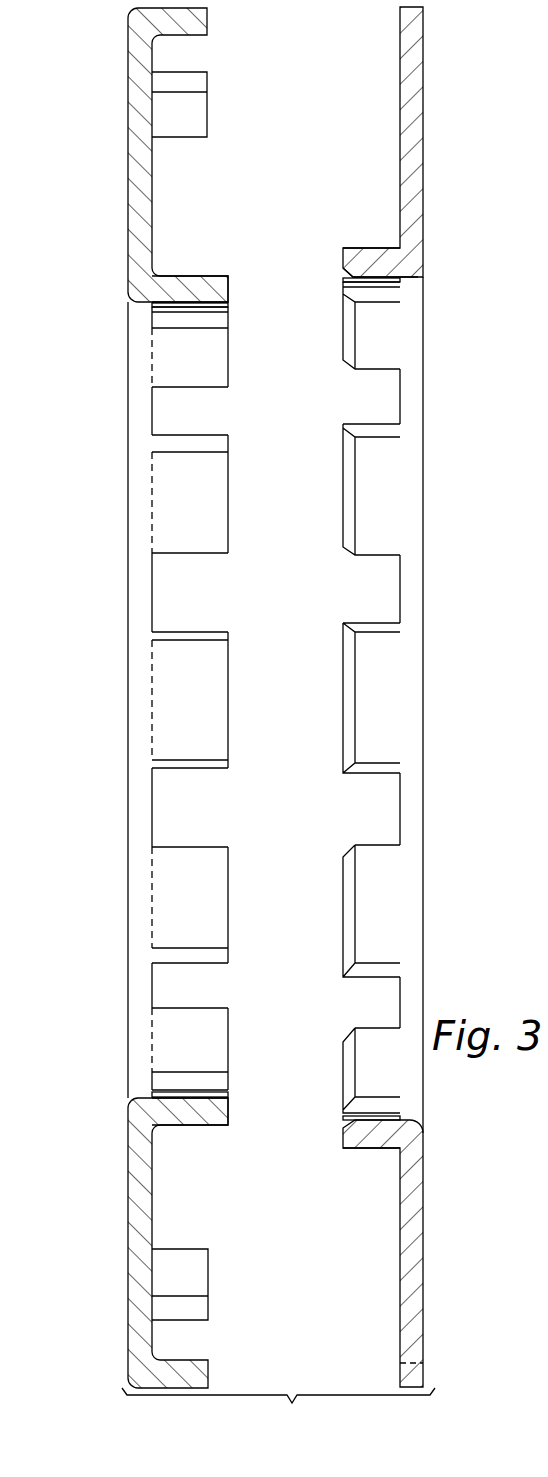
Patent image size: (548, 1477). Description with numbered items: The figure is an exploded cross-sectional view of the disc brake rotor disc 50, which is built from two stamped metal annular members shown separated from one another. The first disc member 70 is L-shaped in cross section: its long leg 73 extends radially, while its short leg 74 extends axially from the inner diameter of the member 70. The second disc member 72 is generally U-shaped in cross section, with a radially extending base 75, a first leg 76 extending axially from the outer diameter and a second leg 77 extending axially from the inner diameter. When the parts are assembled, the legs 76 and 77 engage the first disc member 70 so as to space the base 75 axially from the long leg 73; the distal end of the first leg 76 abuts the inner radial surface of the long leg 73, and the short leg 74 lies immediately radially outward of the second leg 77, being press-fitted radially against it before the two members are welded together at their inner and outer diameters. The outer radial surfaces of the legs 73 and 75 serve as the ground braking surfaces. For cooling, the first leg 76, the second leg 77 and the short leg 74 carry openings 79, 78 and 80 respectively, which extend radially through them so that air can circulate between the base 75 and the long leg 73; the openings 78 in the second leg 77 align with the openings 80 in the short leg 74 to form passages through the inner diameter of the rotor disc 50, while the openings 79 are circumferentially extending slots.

The rotor disc 50 is at (124, 37).
The first disc member 70 is at (424, 97).
The second disc member 72 is at (156, 200).
The long leg 73 is at (407, 128).
The short leg 74 is at (362, 262).
The base 75 is at (137, 168).
The first leg 76 is at (197, 23).
The second leg 77 is at (193, 283).
The openings 78 is at (210, 435).
The openings 79 is at (200, 80).
The openings 80 is at (365, 425).